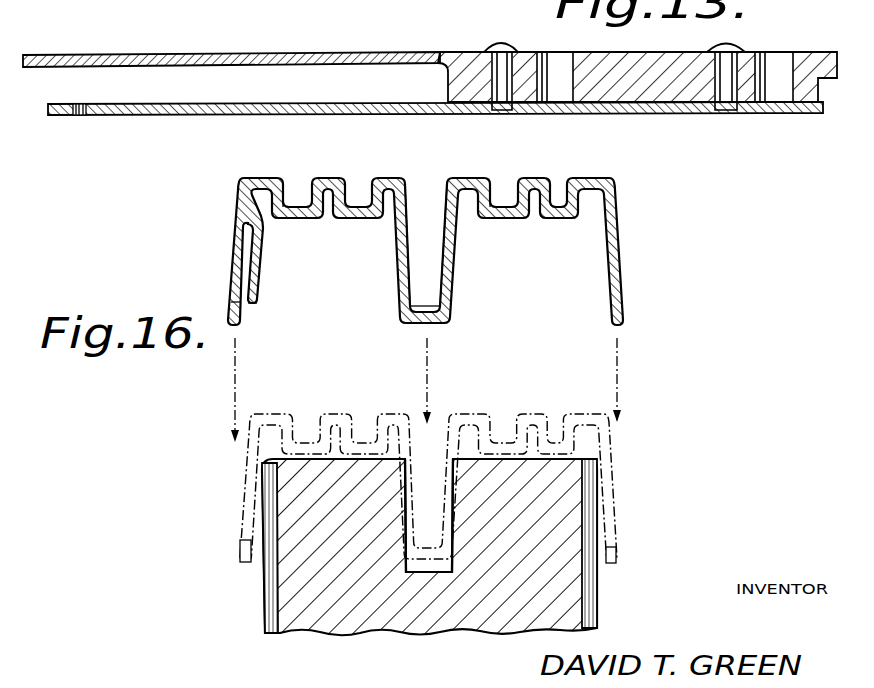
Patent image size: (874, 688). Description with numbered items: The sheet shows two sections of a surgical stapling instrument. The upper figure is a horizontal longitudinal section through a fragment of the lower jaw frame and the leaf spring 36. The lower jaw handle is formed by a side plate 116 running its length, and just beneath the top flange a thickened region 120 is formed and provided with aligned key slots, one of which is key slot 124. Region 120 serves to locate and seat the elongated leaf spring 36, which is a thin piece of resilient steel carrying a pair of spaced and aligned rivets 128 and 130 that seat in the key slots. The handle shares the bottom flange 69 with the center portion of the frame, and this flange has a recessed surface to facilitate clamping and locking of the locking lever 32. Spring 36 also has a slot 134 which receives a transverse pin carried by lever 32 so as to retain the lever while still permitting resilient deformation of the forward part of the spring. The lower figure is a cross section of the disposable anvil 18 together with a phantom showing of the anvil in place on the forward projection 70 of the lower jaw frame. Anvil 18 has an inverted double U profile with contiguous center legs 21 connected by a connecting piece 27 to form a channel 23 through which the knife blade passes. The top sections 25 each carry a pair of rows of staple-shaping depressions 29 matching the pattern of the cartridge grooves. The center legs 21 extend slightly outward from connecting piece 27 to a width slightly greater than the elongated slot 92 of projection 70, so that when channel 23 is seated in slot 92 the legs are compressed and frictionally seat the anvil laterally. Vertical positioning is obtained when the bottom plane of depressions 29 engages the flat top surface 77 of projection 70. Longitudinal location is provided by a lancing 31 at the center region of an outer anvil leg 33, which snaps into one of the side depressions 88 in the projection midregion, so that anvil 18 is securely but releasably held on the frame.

In FIG. 16, the disposable anvil 18 is at (628, 256).
In FIG. 16, the center legs 21 is at (396, 278).
In FIG. 16, the channel 23 is at (427, 223).
In FIG. 16, the top sections 25 is at (261, 177).
In FIG. 16, the connecting piece 27 is at (420, 327).
In FIG. 16, the staple-shaping depressions 29 is at (304, 200).
In FIG. 16, the lancing 31 is at (262, 276).
In FIG. 16, the anvil leg 33 is at (230, 263).
In FIG. 13, the locking lever 32 is at (114, 0).
In FIG. 13, the leaf spring 36 is at (190, 116).
In FIG. 13, the bottom flange 69 is at (435, 0).
In FIG. 16, the forward projection 70 is at (348, 633).
In FIG. 16, the top surface 77 is at (300, 457).
In FIG. 16, the side depressions 88 is at (263, 620).
In FIG. 16, the elongated slot 92 is at (424, 573).
In FIG. 13, the side plate 116 is at (227, 55).
In FIG. 13, the thickened region 120 is at (645, 85).
In FIG. 13, the key slot 124 is at (560, 62).
In FIG. 13, the rivet 128 is at (503, 43).
In FIG. 13, the rivet 130 is at (728, 47).
In FIG. 13, the slot 134 is at (79, 116).